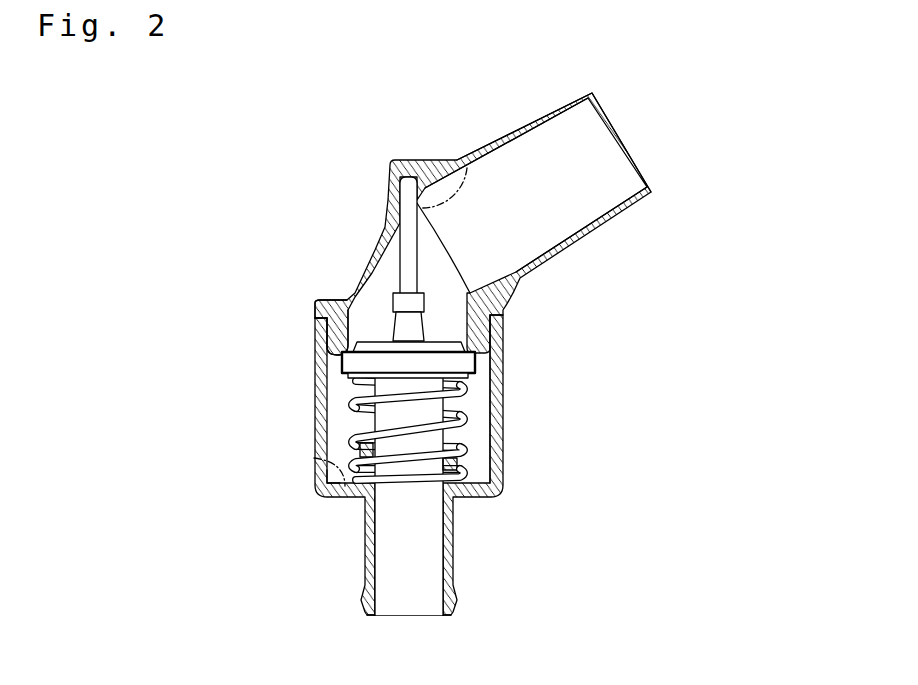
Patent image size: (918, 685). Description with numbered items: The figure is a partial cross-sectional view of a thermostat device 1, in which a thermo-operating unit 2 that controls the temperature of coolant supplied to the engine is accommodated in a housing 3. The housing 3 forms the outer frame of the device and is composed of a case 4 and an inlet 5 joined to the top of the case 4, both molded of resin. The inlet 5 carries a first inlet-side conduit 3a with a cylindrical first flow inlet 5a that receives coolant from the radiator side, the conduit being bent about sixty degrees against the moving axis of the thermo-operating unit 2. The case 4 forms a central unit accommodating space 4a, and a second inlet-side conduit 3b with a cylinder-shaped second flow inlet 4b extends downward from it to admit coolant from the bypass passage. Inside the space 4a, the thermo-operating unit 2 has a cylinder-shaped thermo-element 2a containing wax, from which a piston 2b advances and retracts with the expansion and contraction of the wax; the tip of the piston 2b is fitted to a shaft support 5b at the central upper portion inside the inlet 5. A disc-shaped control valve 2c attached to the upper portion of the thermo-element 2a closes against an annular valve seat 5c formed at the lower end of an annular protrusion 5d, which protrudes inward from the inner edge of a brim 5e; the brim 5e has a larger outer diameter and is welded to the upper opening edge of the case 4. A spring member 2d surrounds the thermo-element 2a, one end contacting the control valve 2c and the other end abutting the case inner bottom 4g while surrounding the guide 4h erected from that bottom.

The thermostat device 1 is at (713, 155).
The thermo-operating unit 2 is at (470, 430).
The thermo-element 2a is at (442, 402).
The piston 2b is at (405, 265).
The control valve 2c is at (428, 340).
The spring member 2d is at (350, 394).
The housing 3 is at (462, 366).
The first inlet-side conduit 3a is at (610, 117).
The second inlet-side conduit 3b is at (392, 620).
The case 4 is at (501, 494).
The unit accommodating space 4a is at (473, 455).
The second flow inlet 4b is at (407, 593).
The case inner bottom 4g is at (315, 458).
The guide 4h is at (362, 450).
The inlet 5 is at (594, 238).
The first flow inlet 5a is at (613, 175).
The shaft support 5b is at (457, 158).
The valve seat 5c is at (333, 356).
The annular protrusion 5d is at (325, 326).
The brim 5e is at (333, 300).